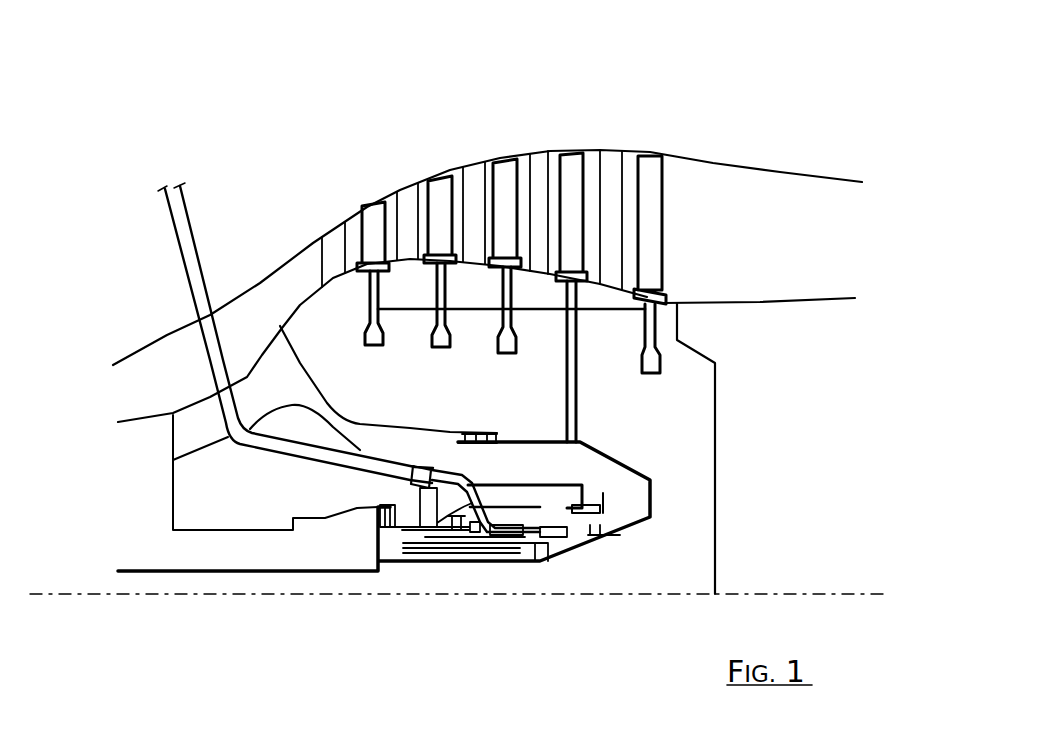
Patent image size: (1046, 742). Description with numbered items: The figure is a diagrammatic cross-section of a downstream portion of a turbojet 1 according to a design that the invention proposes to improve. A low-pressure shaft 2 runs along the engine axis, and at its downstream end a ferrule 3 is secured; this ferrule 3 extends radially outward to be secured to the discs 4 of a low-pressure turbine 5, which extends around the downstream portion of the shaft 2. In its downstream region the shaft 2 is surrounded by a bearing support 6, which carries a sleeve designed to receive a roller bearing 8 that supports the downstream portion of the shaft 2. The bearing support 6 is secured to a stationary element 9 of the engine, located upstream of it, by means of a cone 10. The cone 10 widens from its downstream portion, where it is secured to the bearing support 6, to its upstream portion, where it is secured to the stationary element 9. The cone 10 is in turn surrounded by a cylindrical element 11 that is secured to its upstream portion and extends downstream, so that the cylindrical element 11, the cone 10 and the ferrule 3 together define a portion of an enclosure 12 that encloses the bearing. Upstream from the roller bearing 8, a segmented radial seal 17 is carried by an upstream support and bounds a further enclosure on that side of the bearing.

The turbojet 1 is at (214, 76).
The low-pressure shaft 2 is at (634, 527).
The ferrule 3 is at (617, 457).
The discs 4 is at (515, 350).
The low-pressure turbine 5 is at (623, 125).
The bearing support 6 is at (506, 498).
The roller bearing 8 is at (502, 566).
The stationary element 9 is at (302, 360).
The cone 10 is at (337, 451).
The cylindrical element 11 is at (375, 438).
The enclosure 12 is at (446, 446).
The segmented radial seal 17 is at (397, 566).